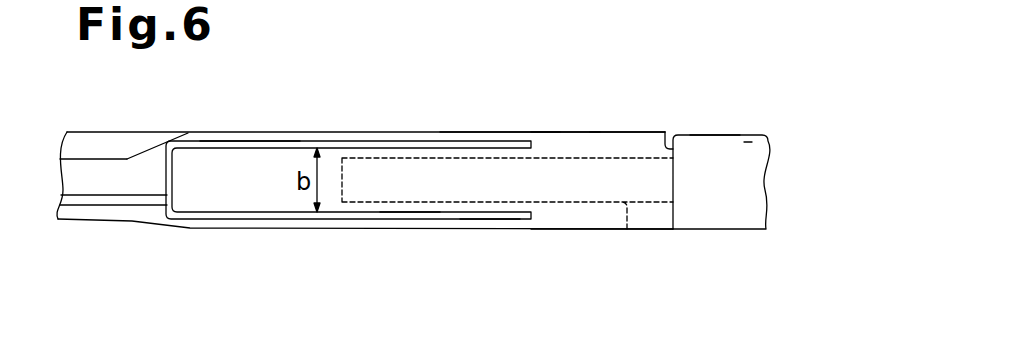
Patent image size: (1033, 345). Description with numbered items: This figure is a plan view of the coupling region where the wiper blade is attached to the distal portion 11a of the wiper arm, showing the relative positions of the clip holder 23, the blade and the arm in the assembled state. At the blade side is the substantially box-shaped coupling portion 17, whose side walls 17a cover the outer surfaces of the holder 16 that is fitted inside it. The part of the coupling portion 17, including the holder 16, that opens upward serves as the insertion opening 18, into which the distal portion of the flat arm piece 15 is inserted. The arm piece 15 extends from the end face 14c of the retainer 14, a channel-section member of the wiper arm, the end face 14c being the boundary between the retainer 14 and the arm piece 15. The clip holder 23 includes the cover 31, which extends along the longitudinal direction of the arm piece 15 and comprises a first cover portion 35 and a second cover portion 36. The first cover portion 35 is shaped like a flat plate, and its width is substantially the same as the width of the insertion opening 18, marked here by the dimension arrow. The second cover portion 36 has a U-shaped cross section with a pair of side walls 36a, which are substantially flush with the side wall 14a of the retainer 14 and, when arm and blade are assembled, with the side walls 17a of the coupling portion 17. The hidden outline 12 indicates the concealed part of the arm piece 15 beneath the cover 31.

The distal portion of the wiper arm 11a is at (748, 142).
The outer tube member 12 is at (99, 221).
The retainer 14 is at (718, 229).
The side wall of the retainer 14a is at (708, 135).
The end face of the retainer 14c is at (667, 133).
The arm piece 15 is at (627, 229).
The holder 16 is at (340, 140).
The coupling portion 17 is at (212, 227).
The side walls of the coupling portion 17a is at (503, 132).
The insertion opening 18 is at (243, 152).
The clip holder 23 is at (610, 132).
The cover 31 is at (490, 210).
The first cover portion 35 is at (412, 212).
The second cover portion 36 is at (582, 229).
The side walls of the second cover portion 36a is at (567, 132).